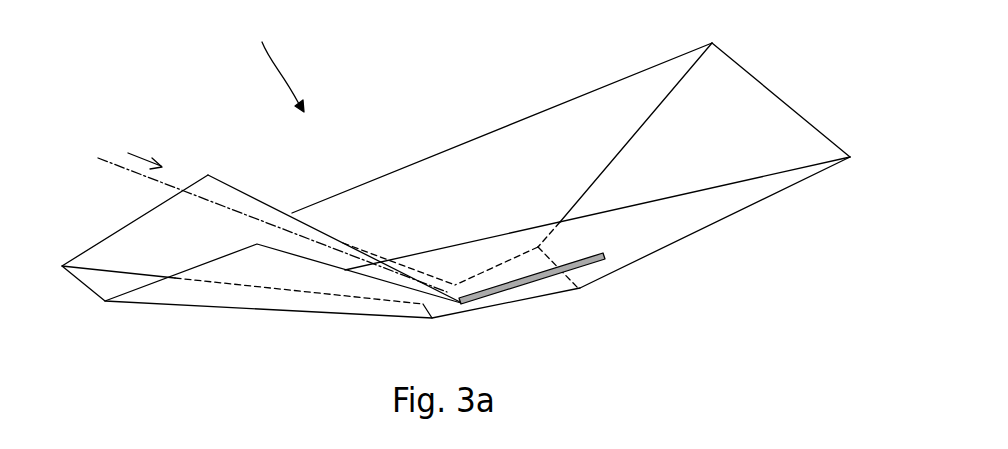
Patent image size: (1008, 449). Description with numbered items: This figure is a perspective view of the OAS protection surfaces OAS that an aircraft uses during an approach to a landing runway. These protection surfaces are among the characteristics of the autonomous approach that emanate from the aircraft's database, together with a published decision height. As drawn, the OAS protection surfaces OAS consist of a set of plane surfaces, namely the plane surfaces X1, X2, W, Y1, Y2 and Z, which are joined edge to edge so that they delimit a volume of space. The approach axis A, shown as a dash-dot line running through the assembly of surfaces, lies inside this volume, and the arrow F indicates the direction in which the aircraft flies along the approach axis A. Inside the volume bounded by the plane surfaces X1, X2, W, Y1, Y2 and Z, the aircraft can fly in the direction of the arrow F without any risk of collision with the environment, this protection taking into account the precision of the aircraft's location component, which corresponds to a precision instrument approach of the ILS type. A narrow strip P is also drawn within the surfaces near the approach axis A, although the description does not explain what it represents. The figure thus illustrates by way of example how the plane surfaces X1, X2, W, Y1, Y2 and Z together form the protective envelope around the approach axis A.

The plane surface W is at (97, 282).
The plane surface X1 is at (127, 238).
The plane surface X2 is at (258, 262).
The plane surface Y1 is at (485, 150).
The plane surface Y2 is at (748, 182).
The plane surface Z is at (780, 117).
The processing strip P is at (535, 282).
The approach axis A is at (113, 158).
The arrow F is at (152, 150).
The OAS protection surfaces OAS is at (268, 63).